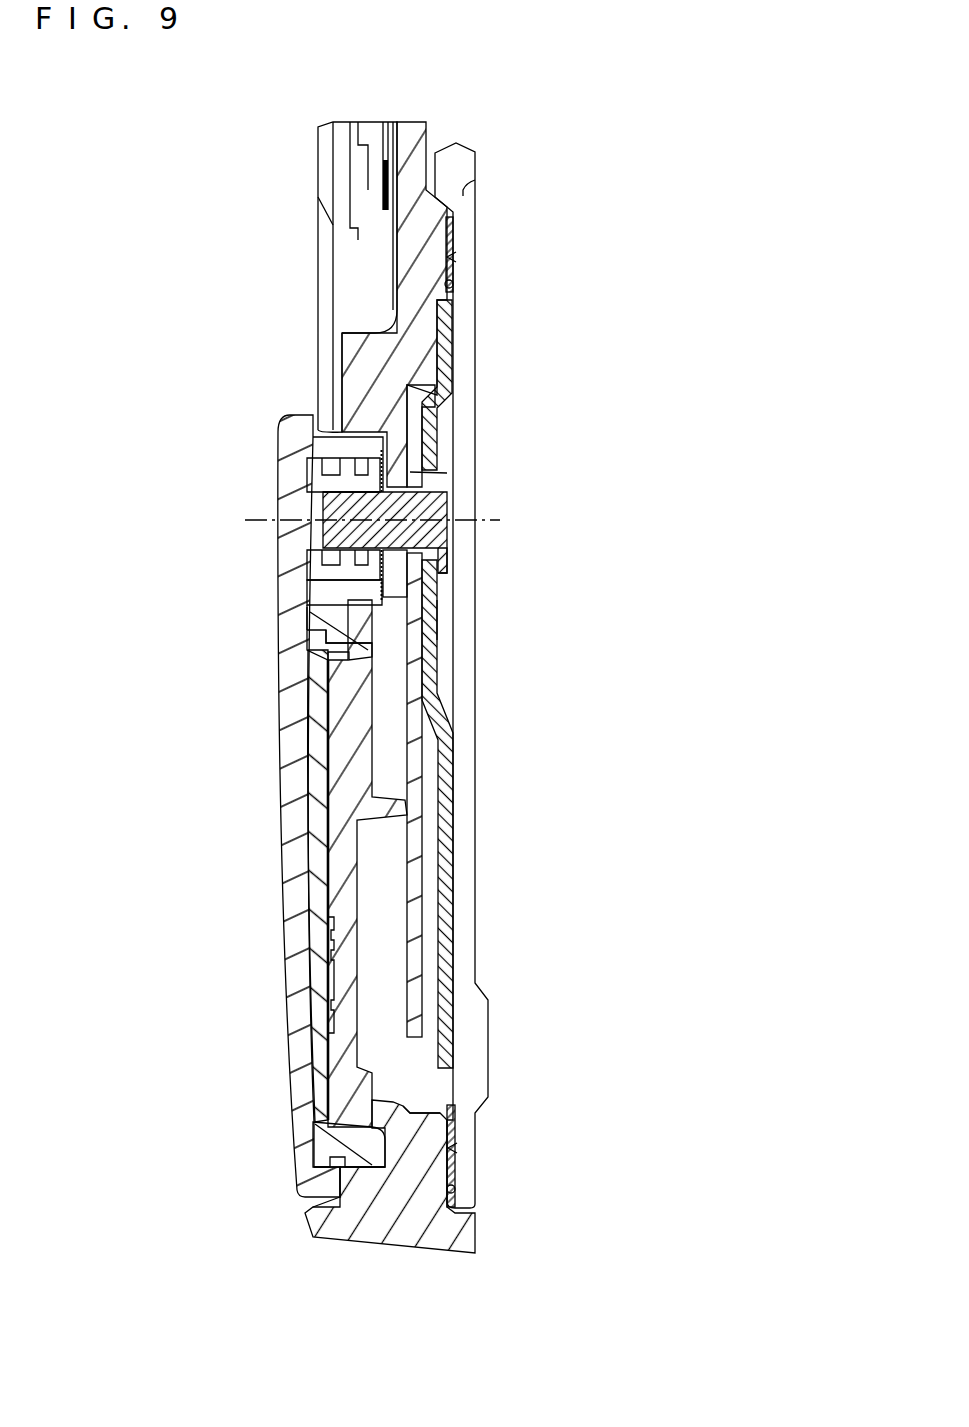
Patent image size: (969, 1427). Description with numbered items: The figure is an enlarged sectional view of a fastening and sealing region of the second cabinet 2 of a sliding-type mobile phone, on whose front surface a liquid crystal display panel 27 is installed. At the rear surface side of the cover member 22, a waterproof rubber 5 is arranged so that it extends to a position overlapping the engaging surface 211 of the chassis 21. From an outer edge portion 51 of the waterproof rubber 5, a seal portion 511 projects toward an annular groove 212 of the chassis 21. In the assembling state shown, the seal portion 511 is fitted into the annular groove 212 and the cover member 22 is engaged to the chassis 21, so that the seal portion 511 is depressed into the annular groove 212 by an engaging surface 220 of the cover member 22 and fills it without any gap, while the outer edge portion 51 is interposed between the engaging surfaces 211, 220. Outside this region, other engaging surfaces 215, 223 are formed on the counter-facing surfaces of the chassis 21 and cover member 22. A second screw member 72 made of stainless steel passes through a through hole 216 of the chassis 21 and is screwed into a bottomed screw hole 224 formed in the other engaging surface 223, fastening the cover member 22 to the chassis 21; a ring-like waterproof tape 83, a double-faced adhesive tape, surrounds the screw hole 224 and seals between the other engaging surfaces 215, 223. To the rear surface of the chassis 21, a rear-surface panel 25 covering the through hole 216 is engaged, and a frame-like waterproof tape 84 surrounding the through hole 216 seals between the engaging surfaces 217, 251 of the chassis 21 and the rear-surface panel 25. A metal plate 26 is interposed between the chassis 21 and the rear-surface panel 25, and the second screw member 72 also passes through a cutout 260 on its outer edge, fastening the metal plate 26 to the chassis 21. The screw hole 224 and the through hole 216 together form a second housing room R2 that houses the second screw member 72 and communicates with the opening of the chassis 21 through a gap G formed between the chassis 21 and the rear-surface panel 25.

The second cabinet 2 is at (502, 143).
The waterproof rubber 5 is at (320, 932).
The chassis 21 is at (410, 140).
The cover member 22 is at (292, 861).
The rear-surface panel 25 is at (463, 399).
The metal plate 26 is at (447, 792).
The liquid crystal display panel 27 is at (323, 282).
The outer edge portion 51 is at (352, 663).
The second screw member 72 is at (435, 539).
The waterproof tape 83 is at (300, 456).
The waterproof tape 84 is at (456, 221).
The engaging surface 211 is at (322, 610).
The annular groove 212 is at (442, 689).
The other engaging surface 215 is at (380, 578).
The through hole 216 is at (433, 473).
The engaging surface 217 is at (455, 257).
The engaging surface 220 is at (320, 655).
The other engaging surface 223 is at (440, 588).
The screw hole 224 is at (322, 493).
The engaging surface 251 is at (456, 287).
The cutout 260 is at (440, 557).
The seal portion 511 is at (442, 620).
The gap G is at (388, 870).
The second housing room R2 is at (447, 502).